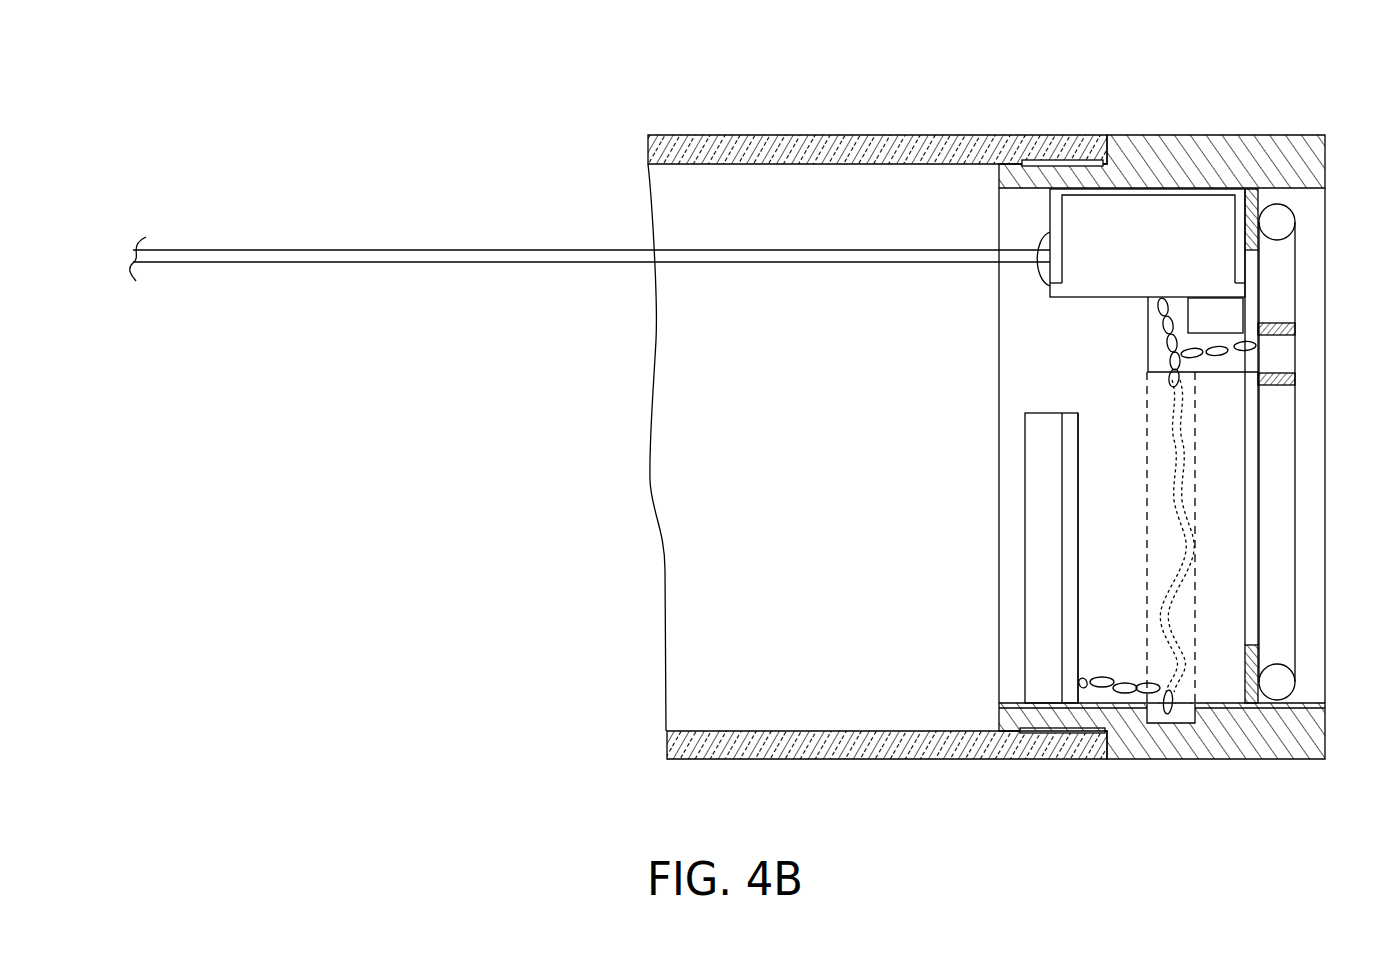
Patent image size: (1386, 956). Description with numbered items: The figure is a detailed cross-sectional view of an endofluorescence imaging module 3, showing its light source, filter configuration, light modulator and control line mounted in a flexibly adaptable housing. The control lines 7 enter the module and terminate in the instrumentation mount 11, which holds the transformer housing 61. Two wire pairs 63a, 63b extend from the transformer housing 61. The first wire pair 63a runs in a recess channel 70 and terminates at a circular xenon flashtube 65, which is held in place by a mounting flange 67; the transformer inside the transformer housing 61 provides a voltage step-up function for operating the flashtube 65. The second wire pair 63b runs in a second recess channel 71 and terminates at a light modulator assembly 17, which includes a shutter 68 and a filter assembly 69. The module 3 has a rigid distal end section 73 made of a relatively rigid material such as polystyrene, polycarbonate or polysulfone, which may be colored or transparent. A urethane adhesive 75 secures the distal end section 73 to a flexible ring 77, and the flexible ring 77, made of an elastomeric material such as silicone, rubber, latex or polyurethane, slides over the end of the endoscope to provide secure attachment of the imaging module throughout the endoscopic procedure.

The endofluorescence imaging module 3 is at (1212, 88).
The control lines 7 is at (408, 249).
The instrumentation mount 11 is at (1247, 266).
The light modulator assembly 17 is at (1061, 413).
The transformer housing 61 is at (1130, 258).
The first wire pair 63a is at (1222, 360).
The second wire pair 63b is at (1172, 502).
The circular xenon flashtube 65 is at (1262, 621).
The mounting flange 67 is at (1246, 674).
The shutter 68 is at (1079, 563).
The filter assembly 69 is at (1030, 577).
The recess channel 70 is at (1200, 345).
The second recess channel 71 is at (1163, 622).
The rigid distal end section 73 is at (1276, 760).
The urethane adhesive 75 is at (1050, 160).
The flexible ring 77 is at (713, 761).